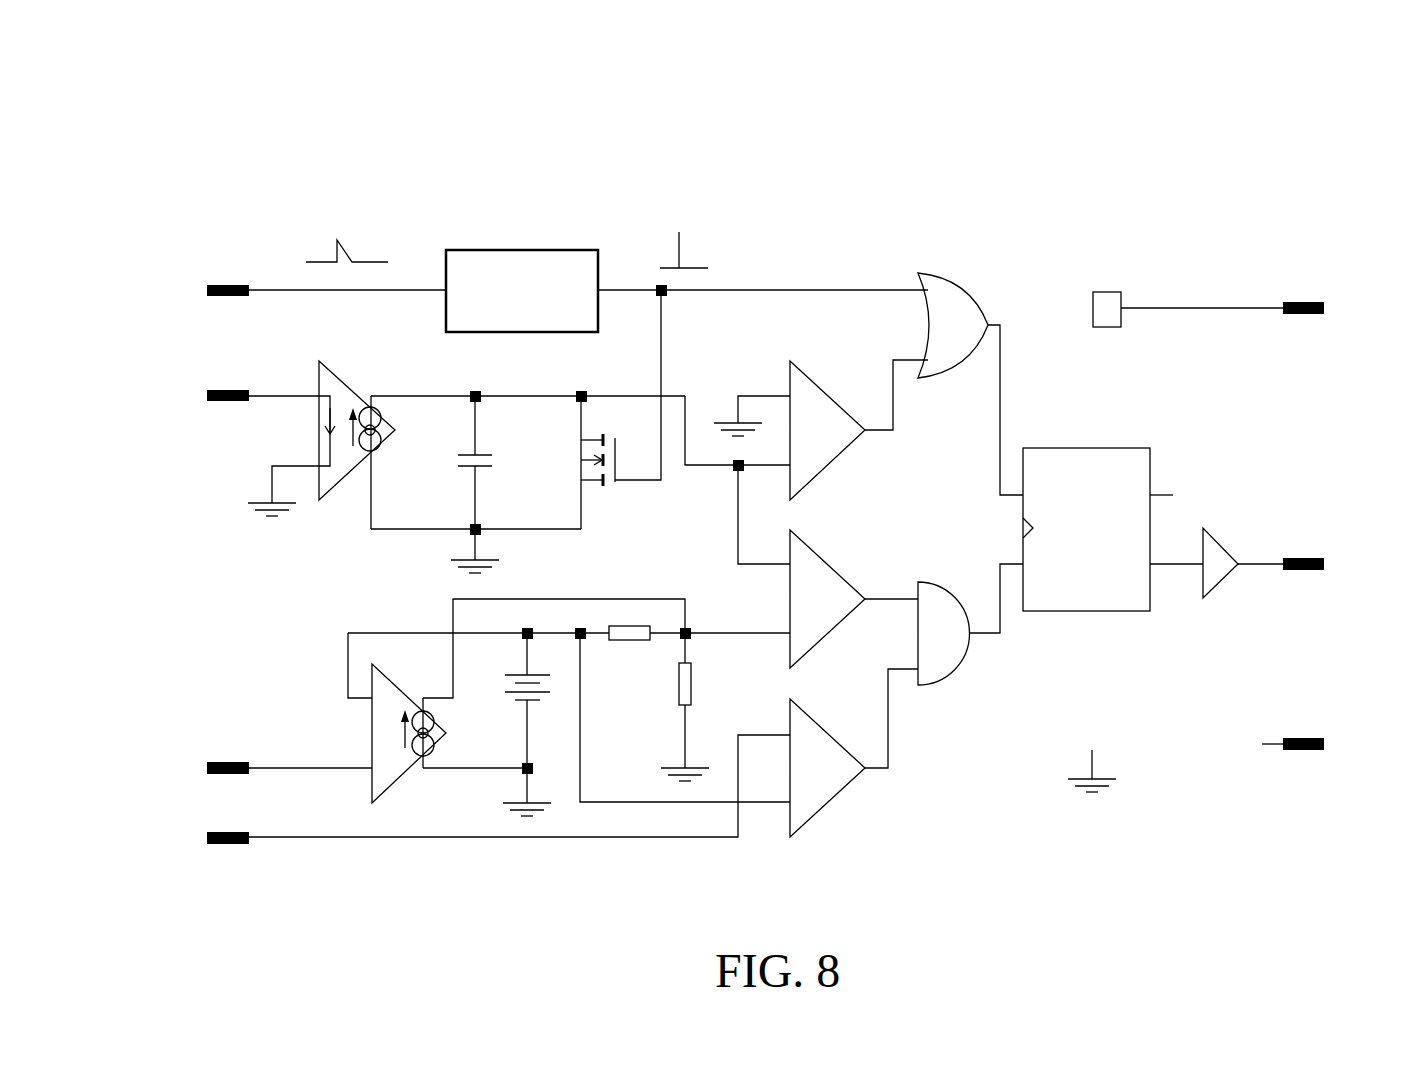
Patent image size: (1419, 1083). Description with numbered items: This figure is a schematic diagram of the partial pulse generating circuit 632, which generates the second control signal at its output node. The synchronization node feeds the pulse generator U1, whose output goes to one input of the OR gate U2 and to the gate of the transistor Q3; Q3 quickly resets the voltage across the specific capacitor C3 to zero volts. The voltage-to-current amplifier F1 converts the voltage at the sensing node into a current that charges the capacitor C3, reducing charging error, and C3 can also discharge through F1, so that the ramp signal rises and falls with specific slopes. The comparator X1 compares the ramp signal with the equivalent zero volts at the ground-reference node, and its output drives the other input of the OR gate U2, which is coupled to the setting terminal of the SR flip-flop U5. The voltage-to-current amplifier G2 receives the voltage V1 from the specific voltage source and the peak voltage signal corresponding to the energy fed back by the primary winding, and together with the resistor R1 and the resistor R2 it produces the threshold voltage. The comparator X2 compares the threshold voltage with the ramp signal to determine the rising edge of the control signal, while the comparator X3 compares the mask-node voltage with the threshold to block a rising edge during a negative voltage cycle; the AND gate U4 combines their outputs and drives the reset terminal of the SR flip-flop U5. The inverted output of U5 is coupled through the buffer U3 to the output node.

The partial pulse generating circuit 632 is at (290, 130).
The pulse generator U1 is at (522, 278).
The voltage-to-current amplifier F1 is at (357, 445).
The specific capacitor C3 is at (461, 478).
The transistor Q3 is at (598, 469).
The comparator X1 is at (827, 416).
The comparator X2 is at (827, 585).
The comparator X3 is at (827, 754).
The OR gate U2 is at (953, 339).
The AND gate U4 is at (944, 651).
The SR flip-flop U5 is at (1086, 516).
The buffer U3 is at (1220, 579).
The voltage-to-current amplifier G2 is at (409, 724).
The voltage V1 is at (510, 718).
The resistor R1 is at (700, 700).
The resistor R2 is at (629, 647).